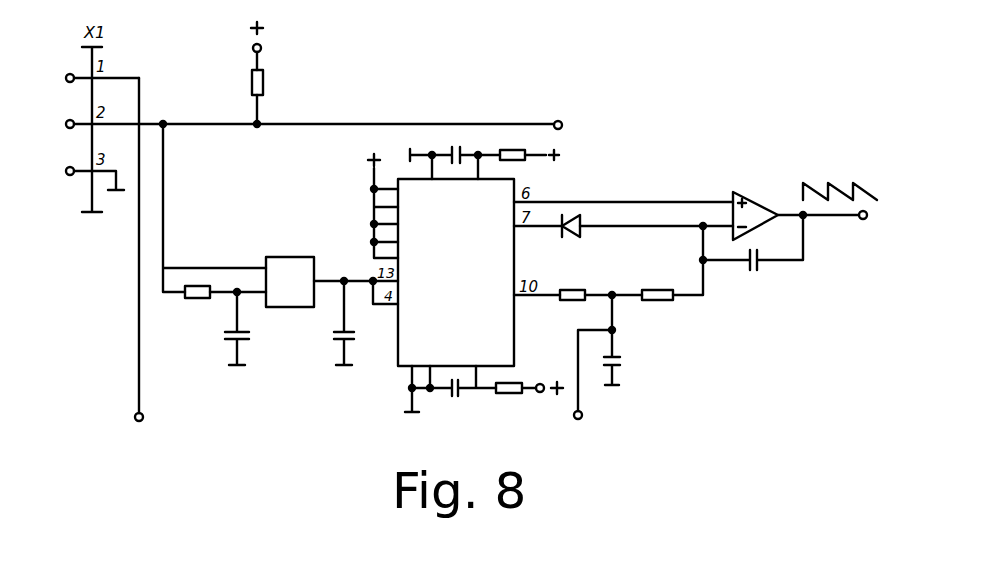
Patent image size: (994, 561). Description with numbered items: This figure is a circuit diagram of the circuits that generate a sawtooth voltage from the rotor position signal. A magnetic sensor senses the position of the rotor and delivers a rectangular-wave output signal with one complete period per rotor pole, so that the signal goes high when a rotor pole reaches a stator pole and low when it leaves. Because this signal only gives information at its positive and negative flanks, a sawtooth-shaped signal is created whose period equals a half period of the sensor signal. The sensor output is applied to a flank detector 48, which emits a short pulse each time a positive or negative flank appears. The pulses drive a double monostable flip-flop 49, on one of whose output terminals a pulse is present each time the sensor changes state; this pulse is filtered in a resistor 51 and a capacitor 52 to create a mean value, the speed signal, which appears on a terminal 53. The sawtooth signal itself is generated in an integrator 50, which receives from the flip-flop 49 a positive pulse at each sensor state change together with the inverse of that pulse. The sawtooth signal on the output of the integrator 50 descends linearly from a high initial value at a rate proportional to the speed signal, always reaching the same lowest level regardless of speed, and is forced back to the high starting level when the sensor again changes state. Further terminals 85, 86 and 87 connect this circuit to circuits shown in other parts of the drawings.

The flank detector 48 is at (288, 257).
The double monostable flip-flop 49 is at (398, 350).
The integrator 50 is at (753, 196).
The resistor 51 is at (568, 301).
The capacitor 52 is at (617, 349).
The terminal 53 is at (582, 420).
The output terminal 85 is at (865, 220).
The terminal 86 is at (561, 121).
The terminal 87 is at (141, 421).